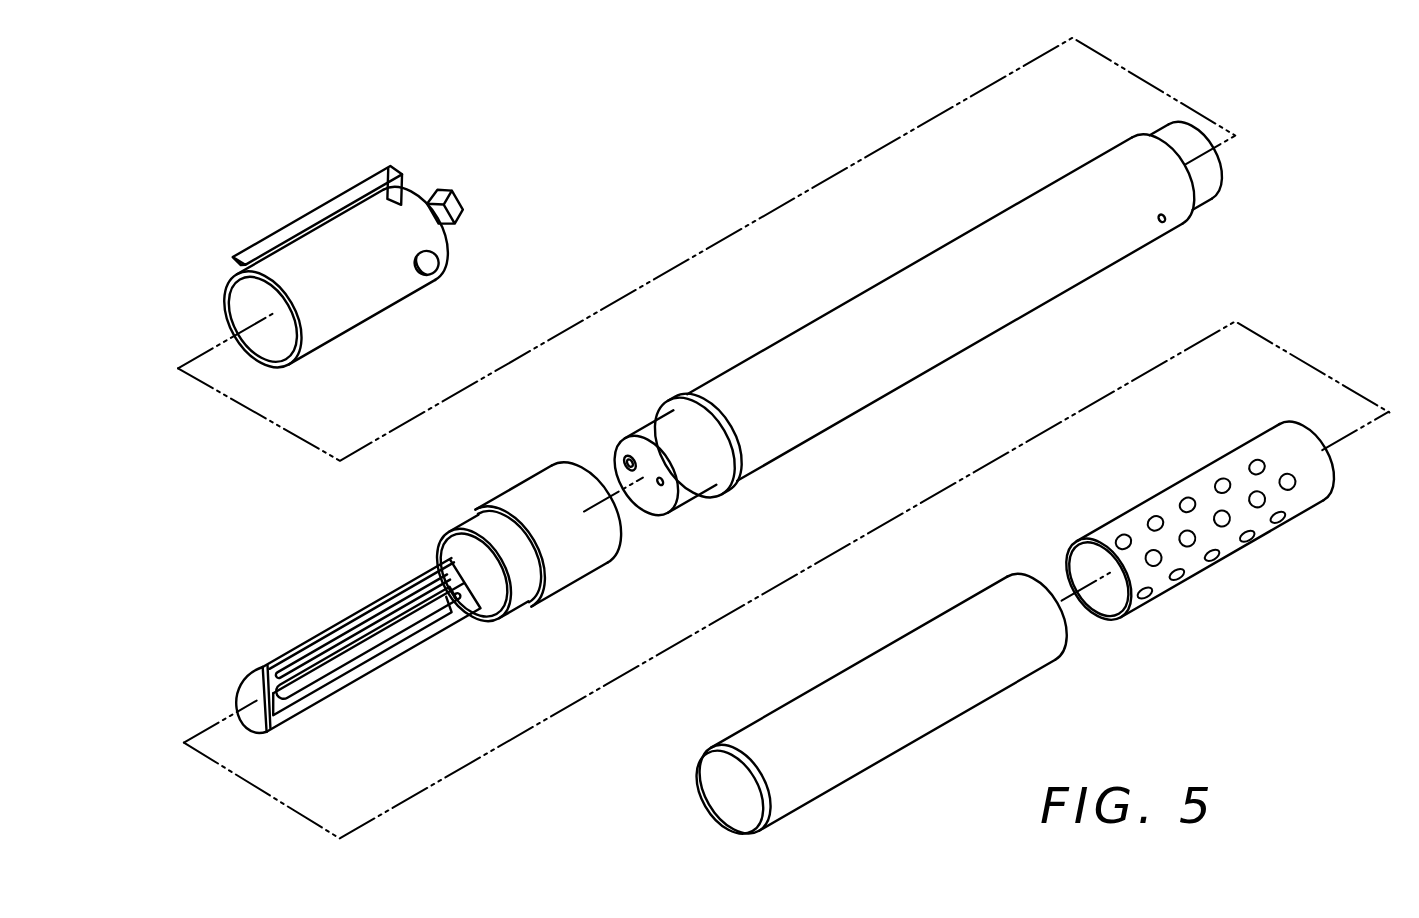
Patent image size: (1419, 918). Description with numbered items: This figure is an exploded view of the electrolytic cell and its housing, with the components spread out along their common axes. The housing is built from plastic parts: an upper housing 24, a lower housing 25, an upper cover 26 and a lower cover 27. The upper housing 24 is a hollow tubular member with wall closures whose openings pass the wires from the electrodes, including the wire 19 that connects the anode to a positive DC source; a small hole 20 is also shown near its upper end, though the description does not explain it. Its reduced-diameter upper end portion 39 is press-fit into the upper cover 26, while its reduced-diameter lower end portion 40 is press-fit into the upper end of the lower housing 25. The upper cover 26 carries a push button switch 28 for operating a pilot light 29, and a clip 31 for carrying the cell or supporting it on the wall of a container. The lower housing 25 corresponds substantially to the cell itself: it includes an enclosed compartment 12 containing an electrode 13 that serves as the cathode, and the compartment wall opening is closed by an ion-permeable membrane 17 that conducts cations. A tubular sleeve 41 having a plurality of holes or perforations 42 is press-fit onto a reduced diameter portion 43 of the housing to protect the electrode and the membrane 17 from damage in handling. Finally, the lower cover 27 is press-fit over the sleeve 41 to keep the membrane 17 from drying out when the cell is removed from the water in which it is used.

The enclosed compartment 12 is at (298, 635).
The electrode 13 is at (290, 698).
The membrane 17 is at (380, 618).
The wire 19 is at (413, 625).
The hole 20 is at (1165, 222).
The upper housing 24 is at (880, 280).
The lower housing 25 is at (555, 480).
The upper cover 26 is at (328, 320).
The lower cover 27 is at (900, 647).
The push button switch 28 is at (453, 185).
The pilot light 29 is at (433, 267).
The clip 31 is at (327, 207).
The upper end portion 39 is at (1200, 183).
The lower end portion 40 is at (693, 483).
The tubular sleeve 41 is at (1197, 492).
The holes or perforations 42 is at (1230, 555).
The reduced diameter portion 43 is at (505, 588).